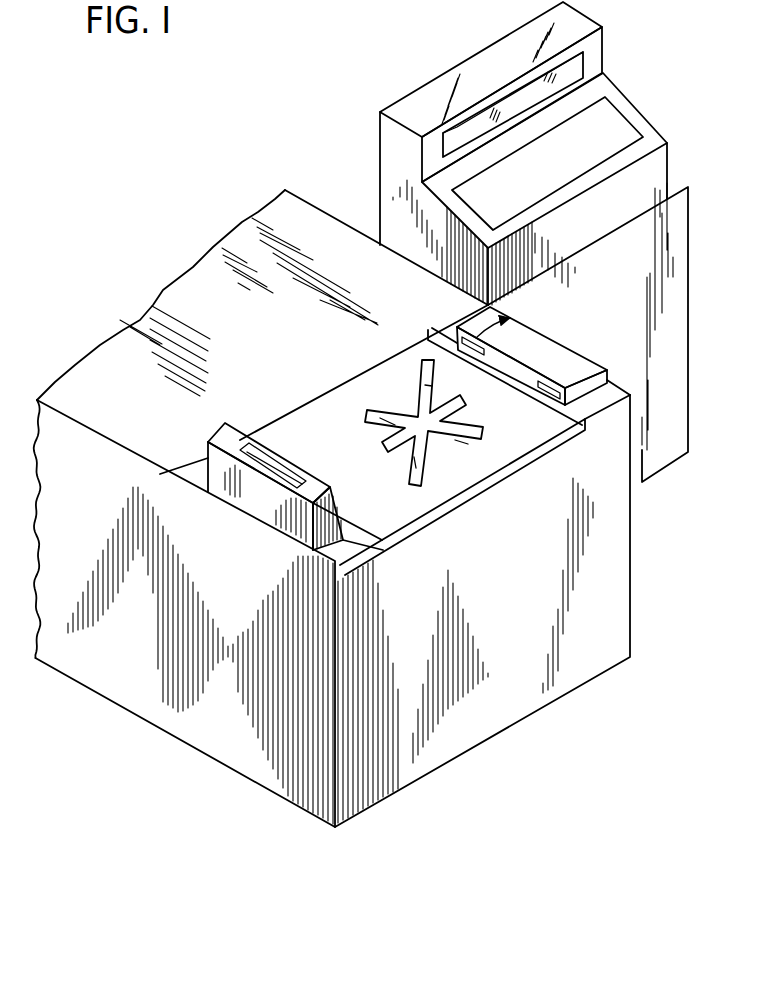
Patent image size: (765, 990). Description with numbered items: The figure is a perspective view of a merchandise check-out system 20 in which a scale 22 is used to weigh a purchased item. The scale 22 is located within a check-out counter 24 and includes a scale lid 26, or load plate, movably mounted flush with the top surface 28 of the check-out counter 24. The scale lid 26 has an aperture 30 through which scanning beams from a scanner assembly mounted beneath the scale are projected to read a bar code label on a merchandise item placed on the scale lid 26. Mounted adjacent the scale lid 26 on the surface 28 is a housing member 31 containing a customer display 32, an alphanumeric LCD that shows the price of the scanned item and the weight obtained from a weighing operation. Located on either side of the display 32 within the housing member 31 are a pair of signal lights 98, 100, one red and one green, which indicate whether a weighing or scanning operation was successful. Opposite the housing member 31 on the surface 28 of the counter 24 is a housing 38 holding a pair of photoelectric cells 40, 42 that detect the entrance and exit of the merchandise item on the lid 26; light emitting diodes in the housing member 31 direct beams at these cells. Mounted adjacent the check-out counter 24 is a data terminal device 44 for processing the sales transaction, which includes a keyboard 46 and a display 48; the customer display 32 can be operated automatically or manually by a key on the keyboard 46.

The merchandise check-out system 20 is at (345, 190).
The scale 22 is at (324, 389).
The check-out counter 24 is at (615, 577).
The scale lid 26 is at (427, 498).
The top surface 28 is at (127, 327).
The aperture 30 is at (468, 418).
The housing member 31 is at (250, 492).
The customer display 32 is at (248, 460).
The housing 38 is at (545, 338).
The photoelectric cell 40 is at (513, 318).
The photoelectric cell 42 is at (556, 384).
The data terminal device 44 is at (660, 128).
The keyboard 46 is at (605, 113).
The display 48 is at (573, 72).
The signal light 98 is at (223, 437).
The signal light 100 is at (280, 525).